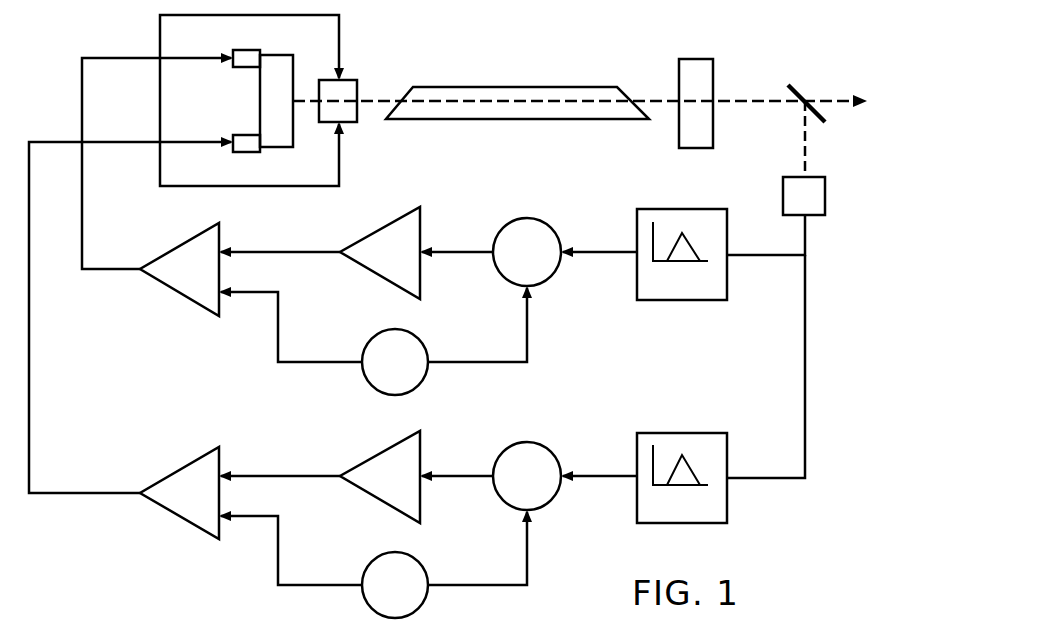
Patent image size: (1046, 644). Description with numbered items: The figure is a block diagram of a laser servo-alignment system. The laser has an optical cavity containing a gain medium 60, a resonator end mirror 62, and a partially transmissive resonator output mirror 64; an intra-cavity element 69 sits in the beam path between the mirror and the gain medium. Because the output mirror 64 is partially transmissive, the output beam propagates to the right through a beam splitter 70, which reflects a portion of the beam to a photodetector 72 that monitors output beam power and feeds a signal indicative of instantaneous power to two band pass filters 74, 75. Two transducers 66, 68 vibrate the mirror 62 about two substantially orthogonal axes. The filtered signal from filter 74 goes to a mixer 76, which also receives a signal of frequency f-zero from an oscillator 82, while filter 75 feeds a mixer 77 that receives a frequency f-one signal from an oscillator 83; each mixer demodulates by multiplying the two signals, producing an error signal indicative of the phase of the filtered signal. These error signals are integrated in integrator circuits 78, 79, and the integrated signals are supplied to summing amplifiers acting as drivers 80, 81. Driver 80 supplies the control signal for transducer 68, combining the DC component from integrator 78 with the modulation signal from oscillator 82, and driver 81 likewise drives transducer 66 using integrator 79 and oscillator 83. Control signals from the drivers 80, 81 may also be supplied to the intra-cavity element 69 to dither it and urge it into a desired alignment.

The gain medium 60 is at (443, 120).
The resonator end mirror 62 is at (260, 107).
The partially transmissive resonator output mirror 64 is at (679, 136).
The transducer 66 is at (242, 152).
The transducer 68 is at (233, 52).
The intra-cavity element 69 is at (356, 80).
The beam splitter 70 is at (792, 92).
The photodetector 72 is at (783, 197).
The band pass filter 74 is at (667, 300).
The band pass filter 75 is at (682, 432).
The mixer 76 is at (528, 220).
The mixer 77 is at (528, 443).
The integrator circuit 78 is at (420, 207).
The integrator circuit 79 is at (420, 430).
The driver 80 is at (190, 243).
The driver 81 is at (187, 468).
The oscillator 82 is at (415, 335).
The oscillator 83 is at (422, 562).